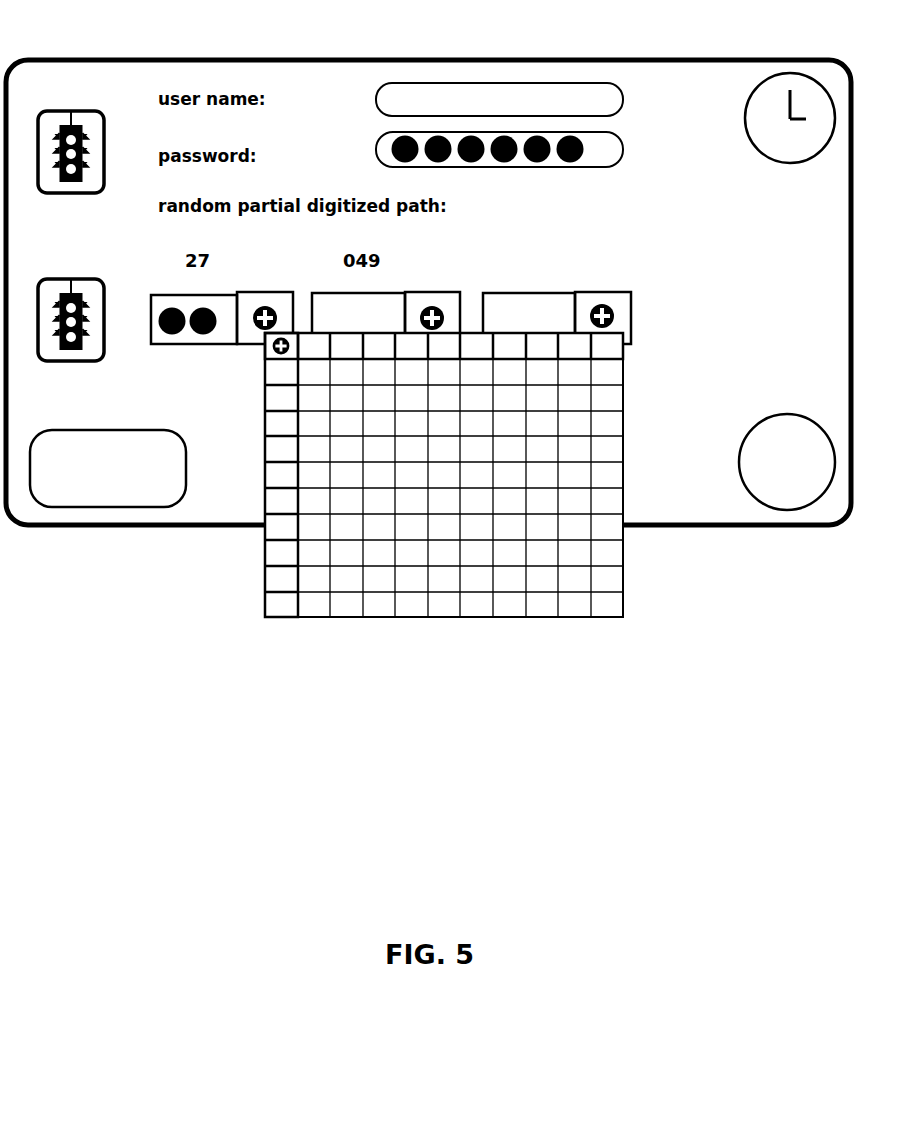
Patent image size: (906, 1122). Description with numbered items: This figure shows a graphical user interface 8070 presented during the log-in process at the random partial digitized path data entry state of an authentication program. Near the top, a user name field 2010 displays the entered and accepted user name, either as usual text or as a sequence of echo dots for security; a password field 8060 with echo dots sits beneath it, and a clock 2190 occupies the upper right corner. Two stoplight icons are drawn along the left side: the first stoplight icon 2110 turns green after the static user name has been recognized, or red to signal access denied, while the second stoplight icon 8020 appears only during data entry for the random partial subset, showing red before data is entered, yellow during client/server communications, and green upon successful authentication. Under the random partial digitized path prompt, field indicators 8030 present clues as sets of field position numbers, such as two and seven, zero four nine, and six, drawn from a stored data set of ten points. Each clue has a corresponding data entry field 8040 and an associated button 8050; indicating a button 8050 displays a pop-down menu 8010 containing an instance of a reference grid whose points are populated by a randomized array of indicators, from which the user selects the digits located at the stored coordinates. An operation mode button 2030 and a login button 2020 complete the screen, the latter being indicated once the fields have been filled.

The interface 8070 is at (312, 58).
The first stoplight icon 2110 is at (66, 108).
The second stoplight icon 8020 is at (36, 277).
The user name field 2010 is at (418, 80).
The password field 8060 is at (628, 148).
The clock 2190 is at (774, 76).
The field indicators 8030 is at (530, 232).
The button 8050 is at (637, 316).
The data entry field 8040 is at (196, 350).
The pop-down menu 8010 is at (496, 622).
The operation mode button 2030 is at (104, 427).
The login button 2020 is at (748, 426).